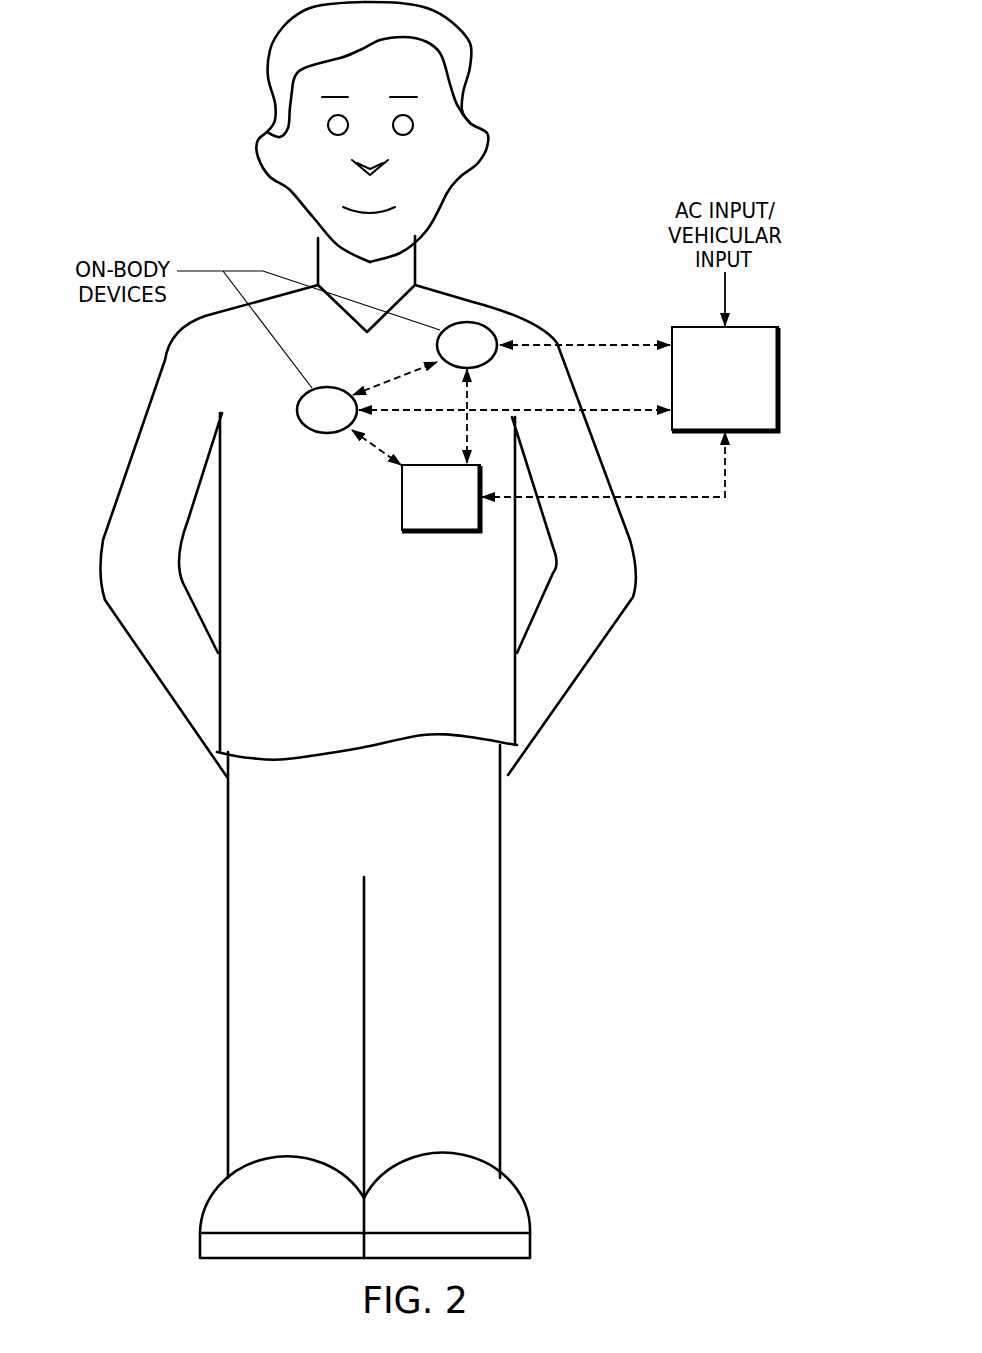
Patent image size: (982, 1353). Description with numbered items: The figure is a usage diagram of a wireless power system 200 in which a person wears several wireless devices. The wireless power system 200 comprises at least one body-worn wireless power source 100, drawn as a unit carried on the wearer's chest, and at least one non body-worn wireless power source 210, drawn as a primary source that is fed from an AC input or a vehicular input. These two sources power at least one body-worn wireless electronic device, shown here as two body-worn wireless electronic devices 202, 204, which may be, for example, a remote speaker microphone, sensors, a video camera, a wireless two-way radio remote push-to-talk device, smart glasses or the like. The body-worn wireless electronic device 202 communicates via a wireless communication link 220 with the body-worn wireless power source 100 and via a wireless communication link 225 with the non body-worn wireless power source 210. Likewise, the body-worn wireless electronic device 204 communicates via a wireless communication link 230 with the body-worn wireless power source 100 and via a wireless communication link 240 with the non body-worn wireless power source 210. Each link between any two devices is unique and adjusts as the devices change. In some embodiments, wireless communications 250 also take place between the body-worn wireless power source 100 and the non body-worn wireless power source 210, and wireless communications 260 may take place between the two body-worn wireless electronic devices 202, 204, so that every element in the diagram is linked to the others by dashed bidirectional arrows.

The wireless power system 200 is at (657, 1149).
The body-worn wireless electronic device 204 is at (466, 322).
The body-worn wireless electronic device 202 is at (309, 436).
The body-worn wireless power source 100 is at (462, 535).
The non body-worn wireless power source 210 is at (779, 378).
The wireless communication link 240 is at (627, 345).
The wireless communication link 225 is at (627, 410).
The wireless communication link 230 is at (466, 420).
The wireless communications 260 is at (390, 378).
The wireless communication link 220 is at (371, 448).
The wireless communications 250 is at (726, 467).